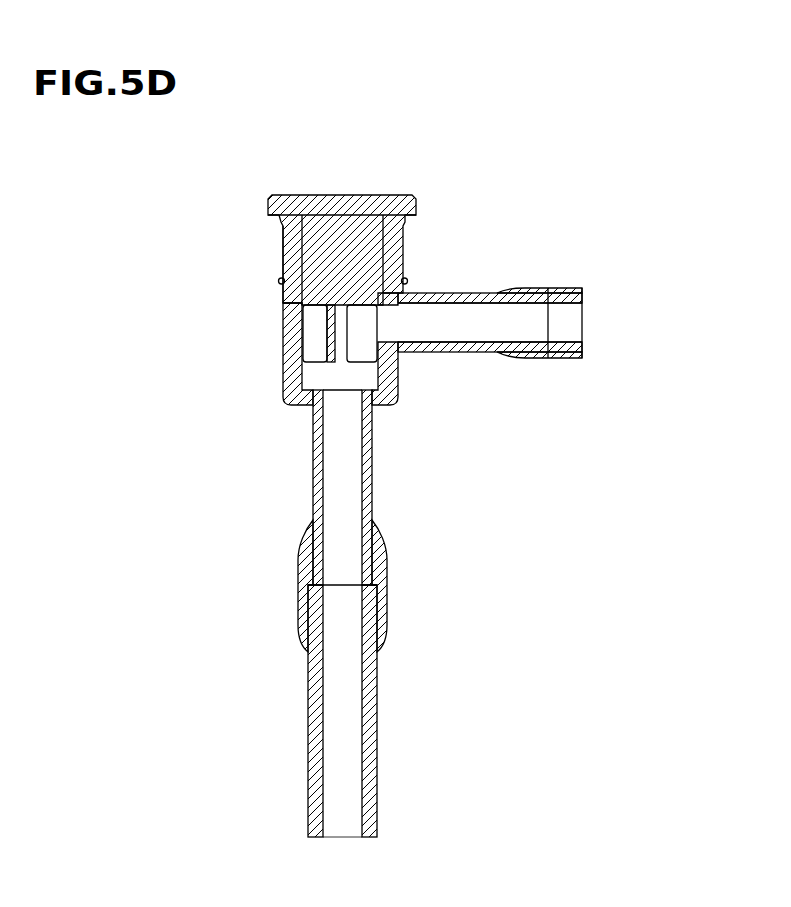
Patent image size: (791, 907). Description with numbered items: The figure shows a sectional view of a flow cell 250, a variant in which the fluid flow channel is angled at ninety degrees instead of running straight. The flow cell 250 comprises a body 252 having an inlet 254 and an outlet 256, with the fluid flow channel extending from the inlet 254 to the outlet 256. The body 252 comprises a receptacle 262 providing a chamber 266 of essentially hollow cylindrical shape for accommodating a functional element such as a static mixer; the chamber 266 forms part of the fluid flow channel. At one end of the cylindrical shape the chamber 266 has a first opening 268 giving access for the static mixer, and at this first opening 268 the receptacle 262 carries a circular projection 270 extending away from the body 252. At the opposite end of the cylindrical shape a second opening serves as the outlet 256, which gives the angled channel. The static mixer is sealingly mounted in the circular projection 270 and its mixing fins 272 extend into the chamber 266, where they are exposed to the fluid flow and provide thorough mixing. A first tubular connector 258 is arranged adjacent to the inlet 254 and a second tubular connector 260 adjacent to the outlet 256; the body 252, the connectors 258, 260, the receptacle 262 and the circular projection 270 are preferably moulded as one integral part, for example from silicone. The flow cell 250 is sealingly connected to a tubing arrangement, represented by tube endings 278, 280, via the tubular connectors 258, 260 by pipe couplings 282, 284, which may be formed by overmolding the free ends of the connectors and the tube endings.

The flow cell 250 is at (543, 190).
The body 252 is at (416, 424).
The inlet 254 is at (410, 307).
The outlet 256 is at (336, 388).
The first tubular connector 258 is at (470, 295).
The second tubular connector 260 is at (346, 176).
The receptacle 262 is at (264, 341).
The chamber 266 is at (372, 382).
The first opening 268 is at (302, 326).
The circular projection 270 is at (296, 256).
The mixing fins 272 is at (317, 353).
The tube ending 278 is at (563, 303).
The tube ending 280 is at (378, 703).
The pipe coupling 282 is at (543, 291).
The pipe coupling 284 is at (383, 598).